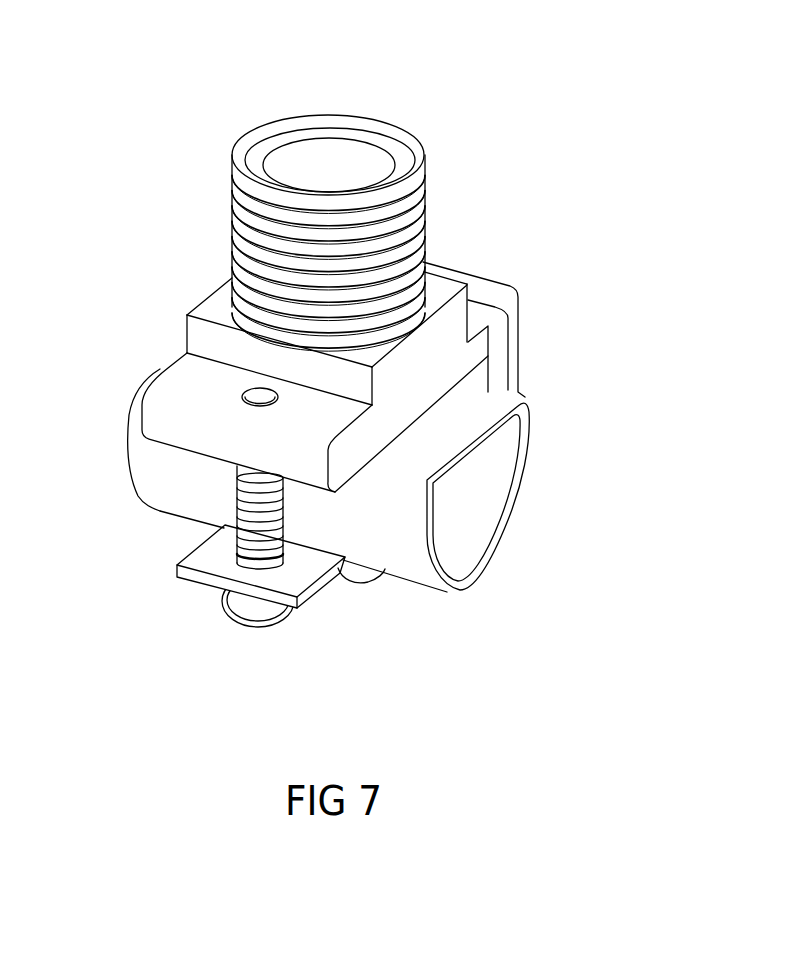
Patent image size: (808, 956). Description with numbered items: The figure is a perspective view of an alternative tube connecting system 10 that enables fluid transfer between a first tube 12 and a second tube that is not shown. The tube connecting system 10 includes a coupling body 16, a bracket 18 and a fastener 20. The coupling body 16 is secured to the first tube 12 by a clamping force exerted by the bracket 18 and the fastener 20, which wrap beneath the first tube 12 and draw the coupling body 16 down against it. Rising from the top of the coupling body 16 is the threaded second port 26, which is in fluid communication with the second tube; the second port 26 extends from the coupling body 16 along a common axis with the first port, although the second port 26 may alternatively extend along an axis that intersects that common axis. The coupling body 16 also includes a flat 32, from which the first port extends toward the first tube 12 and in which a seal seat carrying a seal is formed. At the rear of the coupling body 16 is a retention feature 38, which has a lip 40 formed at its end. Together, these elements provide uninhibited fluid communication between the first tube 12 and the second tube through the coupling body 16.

The second port 26 is at (327, 162).
The coupling body 16 is at (198, 308).
The lip 40 is at (478, 286).
The tube connecting system 10 is at (582, 272).
The retention feature 38 is at (474, 349).
The flat 32 is at (414, 428).
The first tube 12 is at (458, 595).
The bracket 18 is at (358, 586).
The fastener 20 is at (248, 627).